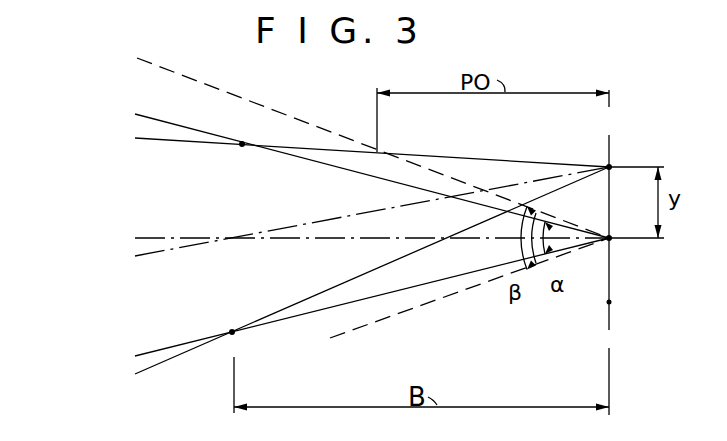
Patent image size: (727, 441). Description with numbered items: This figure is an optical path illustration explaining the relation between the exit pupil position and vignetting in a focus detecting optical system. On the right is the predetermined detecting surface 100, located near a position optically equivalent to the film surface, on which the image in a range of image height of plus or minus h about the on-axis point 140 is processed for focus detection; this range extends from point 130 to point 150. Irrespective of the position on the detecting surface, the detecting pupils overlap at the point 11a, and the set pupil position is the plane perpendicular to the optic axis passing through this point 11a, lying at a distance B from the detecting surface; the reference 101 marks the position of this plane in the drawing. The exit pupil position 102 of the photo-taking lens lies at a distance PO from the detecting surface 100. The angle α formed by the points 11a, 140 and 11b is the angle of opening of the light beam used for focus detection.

The pupil overlap point 11a is at (247, 126).
The second pupil point 11b is at (231, 329).
The lens plane position 101 is at (233, 383).
The exit pupil position 102 is at (377, 127).
The image detection range end point 130 is at (611, 166).
The on-axis point 140 is at (612, 242).
The image detection range end point 150 is at (611, 302).
The predetermined detecting surface 100 is at (609, 330).